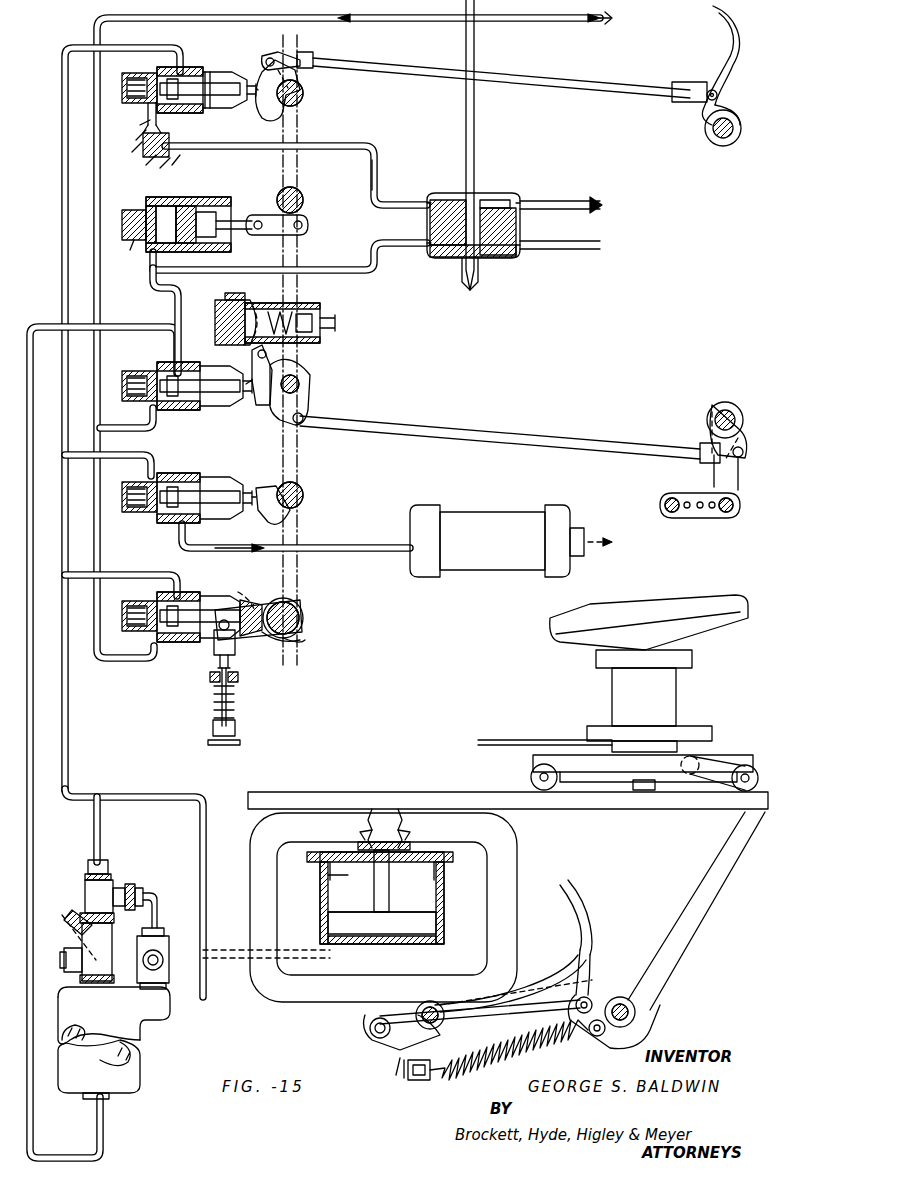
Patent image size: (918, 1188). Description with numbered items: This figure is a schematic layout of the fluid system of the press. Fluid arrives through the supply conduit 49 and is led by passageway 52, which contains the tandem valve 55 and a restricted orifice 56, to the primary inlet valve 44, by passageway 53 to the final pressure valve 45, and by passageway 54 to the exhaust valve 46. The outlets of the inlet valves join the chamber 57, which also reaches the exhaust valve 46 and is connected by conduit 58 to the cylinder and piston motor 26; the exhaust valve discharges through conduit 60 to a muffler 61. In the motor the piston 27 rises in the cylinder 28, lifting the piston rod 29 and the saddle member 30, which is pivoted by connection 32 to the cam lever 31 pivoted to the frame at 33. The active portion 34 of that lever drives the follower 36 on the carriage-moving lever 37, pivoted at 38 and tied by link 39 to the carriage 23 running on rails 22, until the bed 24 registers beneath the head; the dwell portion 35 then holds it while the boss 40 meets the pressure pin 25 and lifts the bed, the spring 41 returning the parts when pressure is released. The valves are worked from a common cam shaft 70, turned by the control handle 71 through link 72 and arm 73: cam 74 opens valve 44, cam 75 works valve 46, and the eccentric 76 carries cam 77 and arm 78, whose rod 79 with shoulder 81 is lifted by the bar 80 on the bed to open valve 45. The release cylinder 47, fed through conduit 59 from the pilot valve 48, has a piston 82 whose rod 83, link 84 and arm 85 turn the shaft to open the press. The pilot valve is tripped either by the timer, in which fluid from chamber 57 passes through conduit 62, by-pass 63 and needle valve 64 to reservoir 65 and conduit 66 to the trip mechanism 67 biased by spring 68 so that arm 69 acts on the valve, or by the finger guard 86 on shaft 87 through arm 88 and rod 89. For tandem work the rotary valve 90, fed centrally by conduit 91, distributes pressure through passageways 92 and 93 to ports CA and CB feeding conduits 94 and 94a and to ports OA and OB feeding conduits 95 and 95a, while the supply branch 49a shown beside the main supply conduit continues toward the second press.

The rails 22 is at (448, 795).
The carriage 23 is at (582, 772).
The bed member 24 is at (652, 605).
The pressure pin 25 is at (640, 792).
The cylinder and piston motor 26 is at (444, 902).
The piston 27 is at (322, 912).
The cylinder 28 is at (322, 878).
The piston rod 29 is at (390, 882).
The yoke or saddle member 30 is at (520, 868).
The cam lever 31 is at (532, 958).
The connection 32 is at (366, 1028).
The pivot 33 is at (430, 1000).
The active portion 34 is at (540, 1010).
The dwell portion 35 is at (572, 922).
The follower 36 is at (592, 998).
The carriage-moving lever 37 is at (700, 878).
The pivot 38 is at (636, 1010).
The link 39 is at (735, 760).
The boss 40 is at (382, 795).
The spring 41 is at (450, 1078).
The primary inlet valve 44 is at (140, 82).
The secondary inlet valve or final pressure valve 45 is at (158, 598).
The exhaust valve 46 is at (150, 522).
The power release cylinder 47 is at (212, 195).
The pilot valve 48 is at (160, 372).
The conduit 49 is at (100, 15).
The pipe branch 49a is at (598, 26).
The passageway 52 is at (162, 132).
The passageway 53 is at (126, 662).
The passageway 54 is at (150, 430).
The tandem valve 55 is at (172, 140).
The restricted orifice 56 is at (146, 125).
The chamber 57 is at (65, 285).
The conduit 58 is at (155, 795).
The conduit 59 is at (150, 292).
The conduit 60 is at (368, 545).
The muffler 61 is at (472, 516).
The conduit 62 is at (100, 830).
The by-pass 63 is at (152, 893).
The adjustable needle-valve 64 is at (168, 970).
The reservoir 65 is at (120, 1032).
The conduit 66 is at (33, 816).
The fluid pressure actuated trip mechanism 67 is at (336, 323).
The spring 68 is at (272, 305).
The arm 69 is at (255, 380).
The cam shaft 70 is at (303, 93).
The control handle 71 is at (735, 25).
The link 72 is at (508, 75).
The arm 73 is at (262, 56).
The cam 74 is at (298, 112).
The cam 75 is at (262, 486).
The eccentric 76 is at (302, 624).
The cam 77 is at (283, 645).
The arm 78 is at (258, 640).
The rod 79 is at (214, 670).
The bar 80 is at (498, 738).
The shoulder 81 is at (240, 740).
The piston 82 is at (178, 240).
The rod 83 is at (234, 232).
The link 84 is at (270, 212).
The arm 85 is at (300, 214).
The finger guard 86 is at (697, 495).
The shaft 87 is at (722, 146).
The arm 88 is at (742, 433).
The rod 89 is at (537, 430).
The rotary valve 90 is at (445, 190).
The conduit 91 is at (476, 128).
The radial passageway 92 is at (495, 205).
The radial passageway 93 is at (452, 260).
The conduit 94 is at (348, 148).
The conduit 94a is at (578, 200).
The conduit 95 is at (370, 272).
The conduit 95a is at (578, 250).
The port CA is at (428, 202).
The port CB is at (520, 203).
The port OA is at (428, 250).
The port OB is at (520, 252).